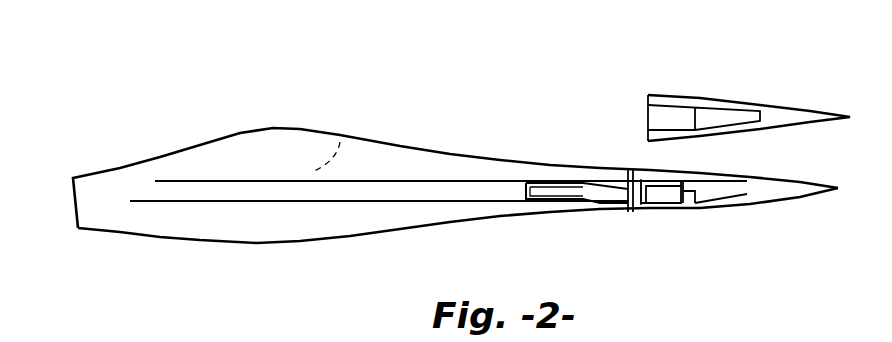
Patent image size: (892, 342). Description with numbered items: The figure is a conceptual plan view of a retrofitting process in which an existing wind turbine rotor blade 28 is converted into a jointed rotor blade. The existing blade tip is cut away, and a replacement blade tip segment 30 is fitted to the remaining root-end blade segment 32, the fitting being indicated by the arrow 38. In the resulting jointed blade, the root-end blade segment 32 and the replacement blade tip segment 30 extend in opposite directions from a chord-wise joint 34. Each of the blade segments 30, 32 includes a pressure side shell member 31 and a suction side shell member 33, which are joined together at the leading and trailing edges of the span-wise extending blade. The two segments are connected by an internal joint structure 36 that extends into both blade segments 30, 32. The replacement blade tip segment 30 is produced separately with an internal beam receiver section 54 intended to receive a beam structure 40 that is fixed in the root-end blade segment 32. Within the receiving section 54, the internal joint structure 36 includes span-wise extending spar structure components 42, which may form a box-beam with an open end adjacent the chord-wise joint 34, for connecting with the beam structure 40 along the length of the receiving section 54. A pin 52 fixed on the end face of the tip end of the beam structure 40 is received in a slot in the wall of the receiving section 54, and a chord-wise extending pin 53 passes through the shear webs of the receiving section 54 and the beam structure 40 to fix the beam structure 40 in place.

The existing rotor blade 28 is at (83, 85).
The replacement blade tip segment 30 is at (712, 101).
The pressure side shell member 31 is at (281, 230).
The root-end blade segment 32 is at (167, 241).
The suction side shell member 33 is at (340, 142).
The chord-wise joint 34 is at (635, 216).
The internal joint structure 36 is at (611, 188).
The arrow 38 is at (749, 151).
The beam structure 40 is at (588, 204).
The spar structure components 42 is at (440, 181).
The pin 52 is at (695, 204).
The chord-wise extending pin 53 is at (651, 186).
The internal beam receiver section 54 is at (663, 100).